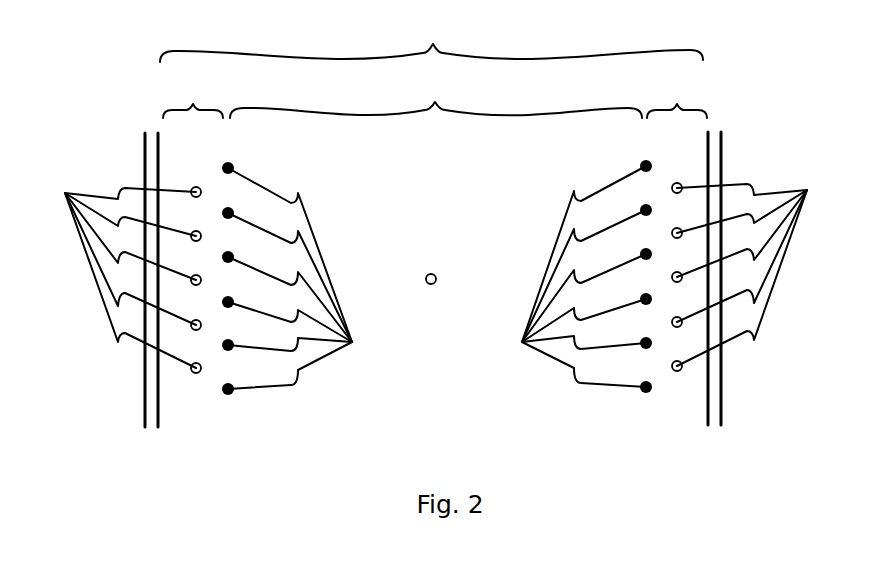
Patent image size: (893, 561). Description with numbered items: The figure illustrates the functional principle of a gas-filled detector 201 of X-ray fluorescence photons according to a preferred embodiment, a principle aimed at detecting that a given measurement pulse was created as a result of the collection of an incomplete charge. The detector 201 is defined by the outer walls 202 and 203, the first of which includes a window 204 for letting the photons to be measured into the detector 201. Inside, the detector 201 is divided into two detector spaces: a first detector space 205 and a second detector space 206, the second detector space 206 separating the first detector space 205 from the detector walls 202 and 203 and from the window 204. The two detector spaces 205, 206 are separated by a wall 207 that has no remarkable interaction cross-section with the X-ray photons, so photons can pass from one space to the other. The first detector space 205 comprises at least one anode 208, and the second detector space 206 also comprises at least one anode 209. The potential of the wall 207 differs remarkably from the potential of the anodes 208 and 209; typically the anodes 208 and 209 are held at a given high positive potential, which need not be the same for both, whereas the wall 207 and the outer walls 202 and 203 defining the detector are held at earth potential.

The gas-filled detector 201 is at (431, 39).
The outer wall 202 is at (144, 170).
The outer wall 203 is at (722, 166).
The window 204 is at (152, 282).
The first detector space 205 is at (436, 99).
The second detector space 206 is at (435, 99).
The wall 207 is at (437, 277).
The anode 208 is at (427, 276).
The anode 209 is at (436, 265).